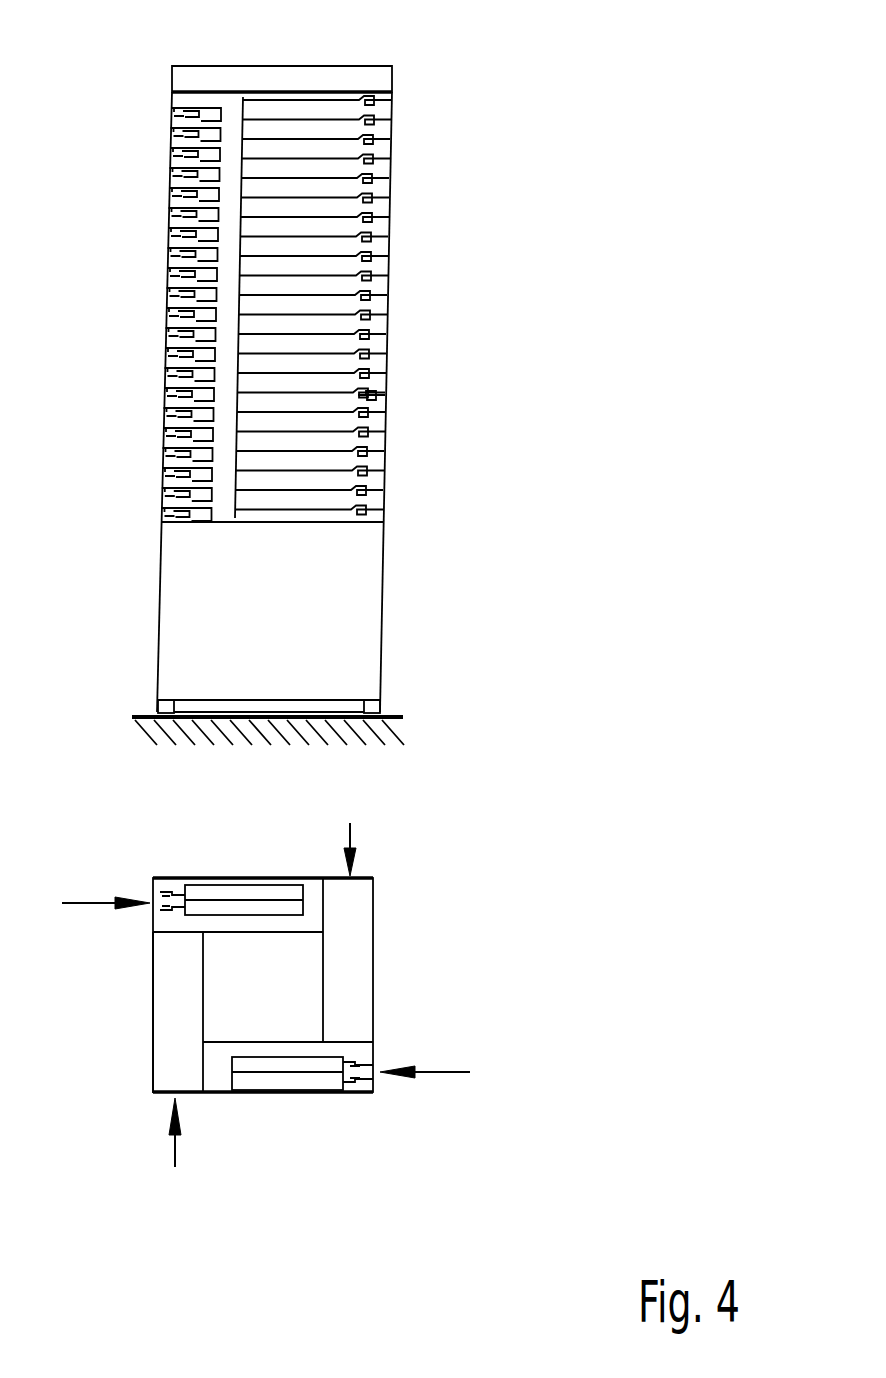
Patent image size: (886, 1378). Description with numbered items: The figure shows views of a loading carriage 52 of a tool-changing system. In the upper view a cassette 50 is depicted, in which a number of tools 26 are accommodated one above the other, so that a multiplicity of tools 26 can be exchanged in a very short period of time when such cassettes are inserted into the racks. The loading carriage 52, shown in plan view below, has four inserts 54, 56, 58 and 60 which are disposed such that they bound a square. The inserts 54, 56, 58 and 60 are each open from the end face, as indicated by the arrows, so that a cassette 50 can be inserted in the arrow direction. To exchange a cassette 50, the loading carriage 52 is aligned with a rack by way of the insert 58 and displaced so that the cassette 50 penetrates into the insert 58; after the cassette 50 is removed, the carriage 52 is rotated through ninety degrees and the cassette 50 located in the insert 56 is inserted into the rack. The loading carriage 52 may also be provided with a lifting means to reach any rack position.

The cassette 50 is at (392, 97).
The tools 26 is at (330, 162).
The loading carriage 52 is at (383, 408).
The insert 54 is at (368, 918).
The insert 56 is at (316, 883).
The insert 58 is at (152, 983).
The insert 60 is at (212, 1098).